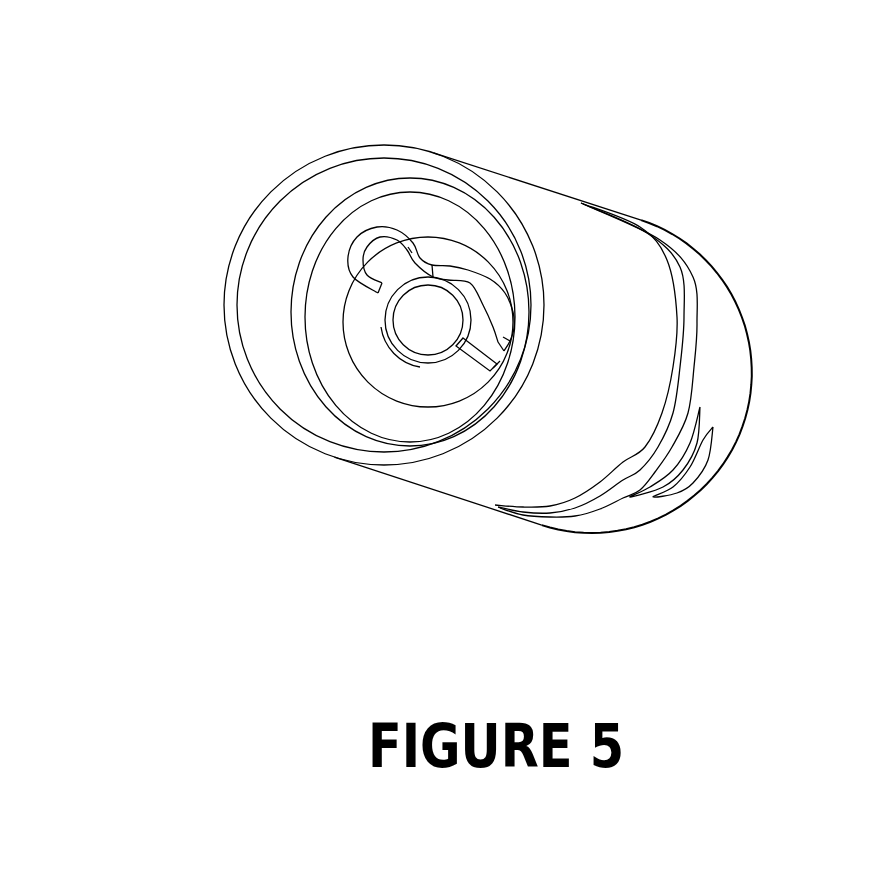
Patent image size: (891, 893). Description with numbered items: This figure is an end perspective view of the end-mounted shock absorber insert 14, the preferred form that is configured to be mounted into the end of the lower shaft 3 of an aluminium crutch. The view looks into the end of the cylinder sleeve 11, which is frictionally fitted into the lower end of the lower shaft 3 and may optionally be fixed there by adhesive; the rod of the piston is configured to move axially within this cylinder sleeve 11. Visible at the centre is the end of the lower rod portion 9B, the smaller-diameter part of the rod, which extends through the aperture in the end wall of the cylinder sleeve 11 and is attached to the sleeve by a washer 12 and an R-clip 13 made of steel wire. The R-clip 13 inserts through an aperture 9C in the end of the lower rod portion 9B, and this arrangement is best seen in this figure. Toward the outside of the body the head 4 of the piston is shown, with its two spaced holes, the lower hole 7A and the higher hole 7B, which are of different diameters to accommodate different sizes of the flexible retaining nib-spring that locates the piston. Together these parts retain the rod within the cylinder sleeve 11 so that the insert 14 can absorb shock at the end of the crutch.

The lower support member shaft 3 is at (560, 232).
The head 4 is at (723, 311).
The lower spaced hole 7A is at (702, 450).
The higher spaced hole 7B is at (702, 412).
The lower rod portion 9B is at (409, 311).
The aperture 9C is at (445, 366).
The cylinder sleeve 11 is at (372, 402).
The washer 12 is at (371, 367).
The R-clip 13 is at (384, 232).
The shock absorber insert 14 is at (752, 107).